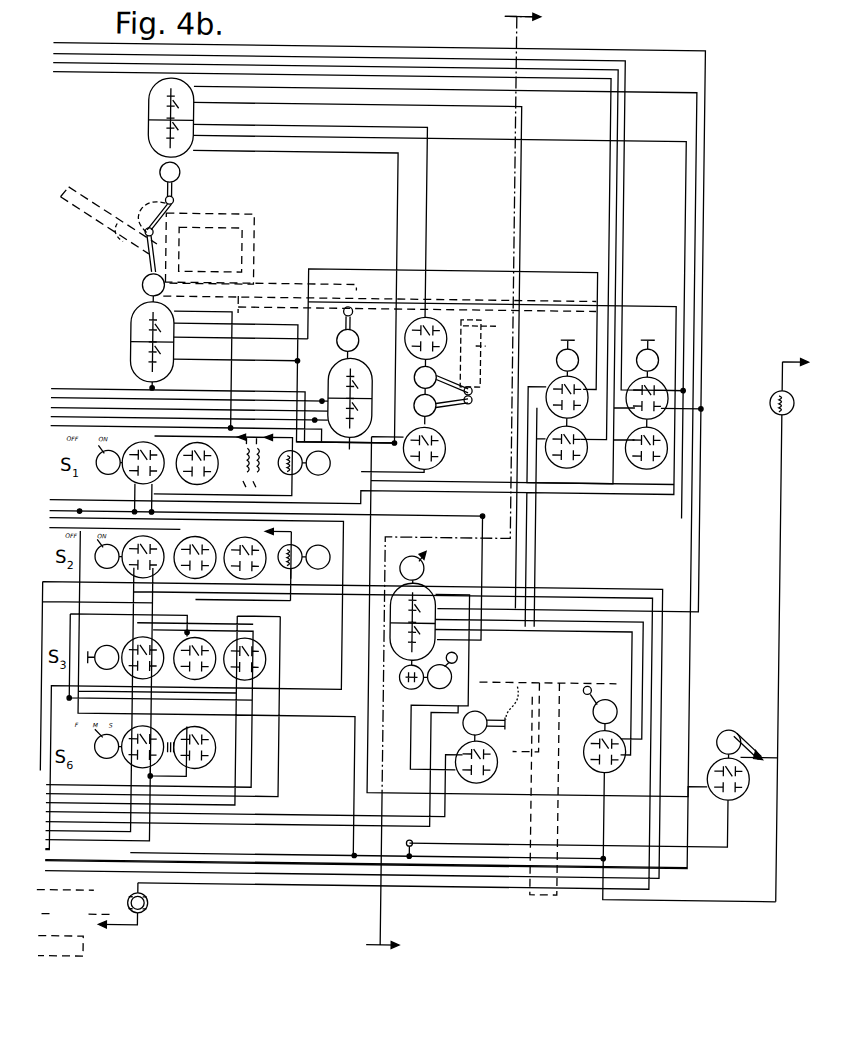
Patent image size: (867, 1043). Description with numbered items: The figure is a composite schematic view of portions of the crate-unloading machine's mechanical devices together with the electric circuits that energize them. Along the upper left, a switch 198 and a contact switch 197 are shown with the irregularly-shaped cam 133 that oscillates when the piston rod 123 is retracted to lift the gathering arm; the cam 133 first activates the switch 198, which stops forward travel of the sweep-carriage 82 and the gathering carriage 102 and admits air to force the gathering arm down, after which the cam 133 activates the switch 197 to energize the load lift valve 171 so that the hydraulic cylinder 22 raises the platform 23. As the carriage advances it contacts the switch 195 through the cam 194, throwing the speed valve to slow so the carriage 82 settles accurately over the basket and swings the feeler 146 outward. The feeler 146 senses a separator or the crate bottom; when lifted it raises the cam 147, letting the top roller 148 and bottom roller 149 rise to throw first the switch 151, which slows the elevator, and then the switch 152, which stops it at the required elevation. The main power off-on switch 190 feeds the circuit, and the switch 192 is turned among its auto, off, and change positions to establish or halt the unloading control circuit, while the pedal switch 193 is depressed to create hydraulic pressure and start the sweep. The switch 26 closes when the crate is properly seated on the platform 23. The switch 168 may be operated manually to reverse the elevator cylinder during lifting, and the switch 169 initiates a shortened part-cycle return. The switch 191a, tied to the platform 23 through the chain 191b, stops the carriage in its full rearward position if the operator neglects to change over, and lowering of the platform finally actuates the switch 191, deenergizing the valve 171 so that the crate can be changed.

The switch 198 is at (150, 103).
The cam 133 is at (139, 196).
The piston rod 123 is at (90, 222).
The contact switch 197 is at (146, 283).
The carriage 102 is at (243, 215).
The sweep-carriage 82 is at (333, 300).
The cam 194 is at (377, 298).
The switch 195 is at (378, 368).
The switch 152 is at (440, 314).
The bottom roller 149 is at (454, 404).
The top switch roller 148 is at (475, 390).
The cam 147 is at (487, 372).
The feeler 146 is at (485, 354).
The switch 151 is at (452, 441).
The switch 168 is at (566, 346).
The switch 169 is at (660, 343).
The main power off-on switch 190 is at (106, 472).
The load lift valve 171 is at (106, 906).
The switch 192 is at (431, 566).
The switch 26 is at (459, 667).
The chain 191b is at (534, 664).
The platform 23 is at (548, 673).
The hydraulic cylinder 22 is at (540, 811).
The switch 191a is at (503, 705).
The switch 191 is at (604, 707).
The pedal switch 193 is at (744, 725).